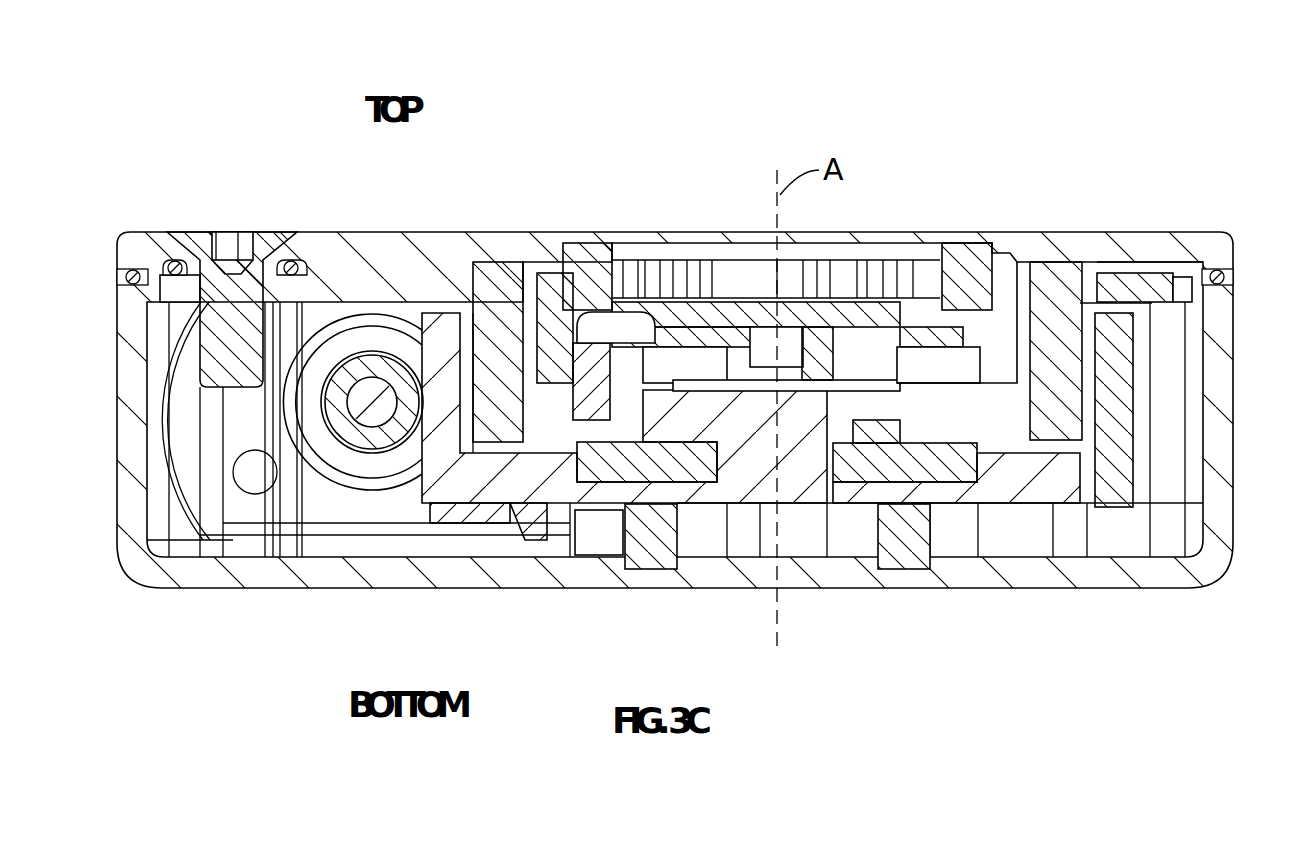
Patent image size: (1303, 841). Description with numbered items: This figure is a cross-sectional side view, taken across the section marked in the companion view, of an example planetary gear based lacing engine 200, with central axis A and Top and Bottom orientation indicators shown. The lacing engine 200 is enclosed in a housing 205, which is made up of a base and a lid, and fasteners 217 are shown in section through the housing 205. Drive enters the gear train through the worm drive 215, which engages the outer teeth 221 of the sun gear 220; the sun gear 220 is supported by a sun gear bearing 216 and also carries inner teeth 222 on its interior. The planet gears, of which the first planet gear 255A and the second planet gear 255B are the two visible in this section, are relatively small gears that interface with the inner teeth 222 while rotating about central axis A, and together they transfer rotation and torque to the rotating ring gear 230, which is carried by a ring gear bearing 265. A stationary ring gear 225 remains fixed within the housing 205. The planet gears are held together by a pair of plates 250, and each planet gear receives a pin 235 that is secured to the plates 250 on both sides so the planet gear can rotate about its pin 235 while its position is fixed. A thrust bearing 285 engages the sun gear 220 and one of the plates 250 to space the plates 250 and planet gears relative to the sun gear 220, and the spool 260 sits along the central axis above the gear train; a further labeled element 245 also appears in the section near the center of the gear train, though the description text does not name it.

The planetary gear based lacing engine 200 is at (1199, 70).
The housing 205 is at (1200, 234).
The worm drive 215 is at (372, 362).
The sun gear bearing 216 is at (650, 560).
The fasteners 217 is at (197, 233).
The sun gear 220 is at (867, 367).
The outer teeth 221 is at (377, 462).
The inner teeth 222 is at (742, 420).
The stationary ring gear 225 is at (502, 373).
The rotating ring gear 230 is at (496, 262).
The pin 235 is at (538, 262).
The slider 245 is at (740, 383).
The pair of plates 250 is at (938, 303).
The planet gear 255A is at (628, 377).
The second planet gear 255B is at (812, 378).
The spool 260 is at (792, 398).
The ring gear bearing 265 is at (595, 262).
The thrust bearing 285 is at (907, 470).